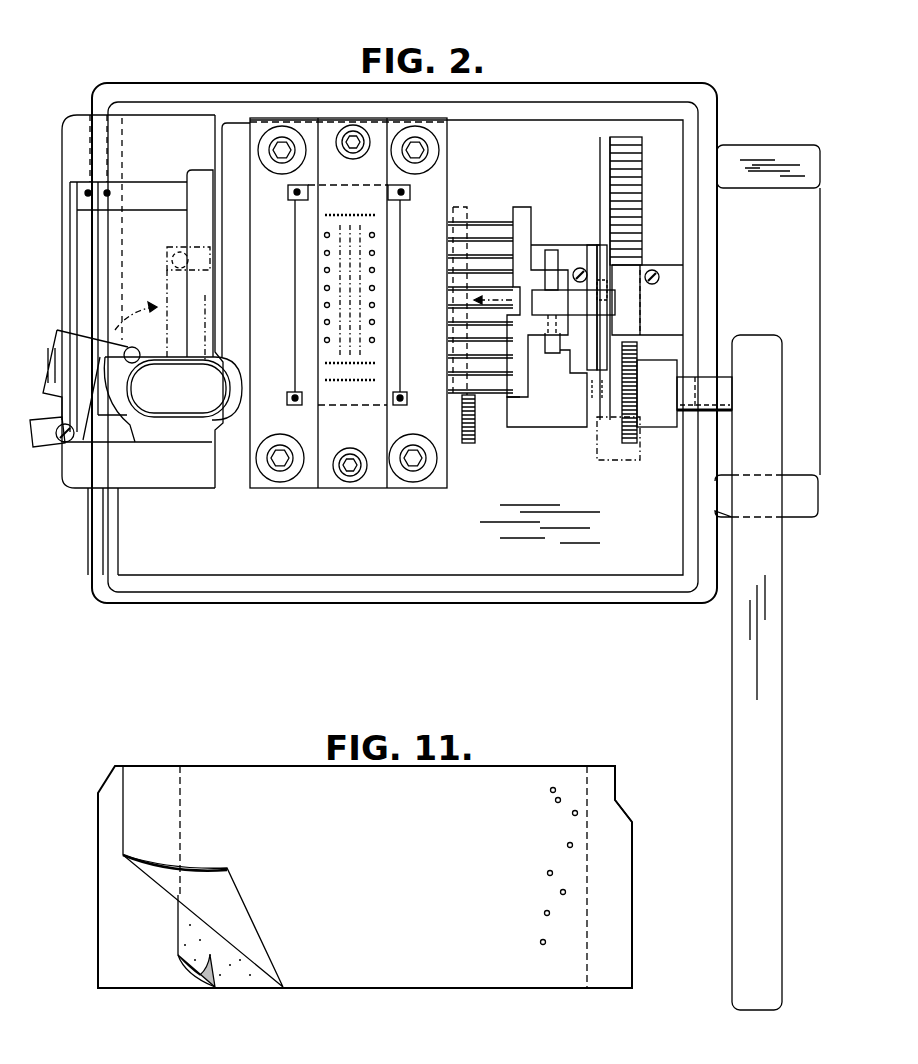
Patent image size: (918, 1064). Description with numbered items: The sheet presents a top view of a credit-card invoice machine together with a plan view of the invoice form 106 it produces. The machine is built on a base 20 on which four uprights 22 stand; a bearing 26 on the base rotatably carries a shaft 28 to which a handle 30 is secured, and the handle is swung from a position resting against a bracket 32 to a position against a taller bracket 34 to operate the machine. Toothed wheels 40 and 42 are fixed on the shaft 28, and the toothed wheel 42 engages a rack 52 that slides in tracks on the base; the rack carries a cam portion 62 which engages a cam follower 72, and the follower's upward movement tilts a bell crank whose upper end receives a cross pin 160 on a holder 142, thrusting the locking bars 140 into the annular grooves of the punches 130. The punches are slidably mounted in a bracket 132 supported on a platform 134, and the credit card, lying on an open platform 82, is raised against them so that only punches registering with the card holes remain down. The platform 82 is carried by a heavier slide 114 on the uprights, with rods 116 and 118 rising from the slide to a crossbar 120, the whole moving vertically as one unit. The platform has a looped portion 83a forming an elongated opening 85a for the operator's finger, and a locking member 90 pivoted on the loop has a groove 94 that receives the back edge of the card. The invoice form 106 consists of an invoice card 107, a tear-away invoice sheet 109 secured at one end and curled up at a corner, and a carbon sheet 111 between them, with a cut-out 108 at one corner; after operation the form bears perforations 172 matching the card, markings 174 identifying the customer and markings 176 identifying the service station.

In FIG. 2, the base 20 is at (268, 603).
In FIG. 2, the uprights 22 is at (433, 151).
In FIG. 2, the bearing 26 is at (555, 425).
In FIG. 2, the shaft 28 is at (725, 410).
In FIG. 2, the handle 30 is at (782, 670).
In FIG. 2, the bracket 32 is at (803, 517).
In FIG. 2, the taller bracket 34 is at (796, 150).
In FIG. 2, the toothed wheel 40 is at (470, 445).
In FIG. 2, the toothed wheel 42 is at (637, 445).
In FIG. 2, the rack 52 is at (640, 172).
In FIG. 2, the cam portion 62 is at (600, 243).
In FIG. 2, the cam follower 72 is at (598, 287).
In FIG. 2, the platform 82 is at (187, 227).
In FIG. 2, the looped portion 83a is at (133, 428).
In FIG. 2, the elongated opening 85a is at (187, 400).
In FIG. 2, the locking member 90 is at (60, 443).
In FIG. 2, the groove 94 is at (50, 330).
In FIG. 11, the invoice form 106 is at (358, 980).
In FIG. 11, the invoice card 107 is at (145, 977).
In FIG. 11, the cut-out 108 is at (617, 800).
In FIG. 11, the tear-away invoice sheet 109 is at (175, 893).
In FIG. 11, the carbon sheet 111 is at (203, 972).
In FIG. 2, the slide 114 is at (235, 473).
In FIG. 2, the rod 116 is at (353, 480).
In FIG. 2, the rod 118 is at (353, 125).
In FIG. 2, the crossbar 120 is at (327, 483).
In FIG. 2, the punches 130 is at (378, 306).
In FIG. 2, the bracket 132 is at (296, 350).
In FIG. 2, the platform 134 is at (268, 485).
In FIG. 2, the locking bars 140 is at (488, 225).
In FIG. 2, the holder 142 is at (530, 214).
In FIG. 2, the cross pin 160 is at (550, 355).
In FIG. 11, the perforations 172 is at (549, 871).
In FIG. 11, the markings 174 is at (443, 922).
In FIG. 11, the markings 176 is at (495, 923).